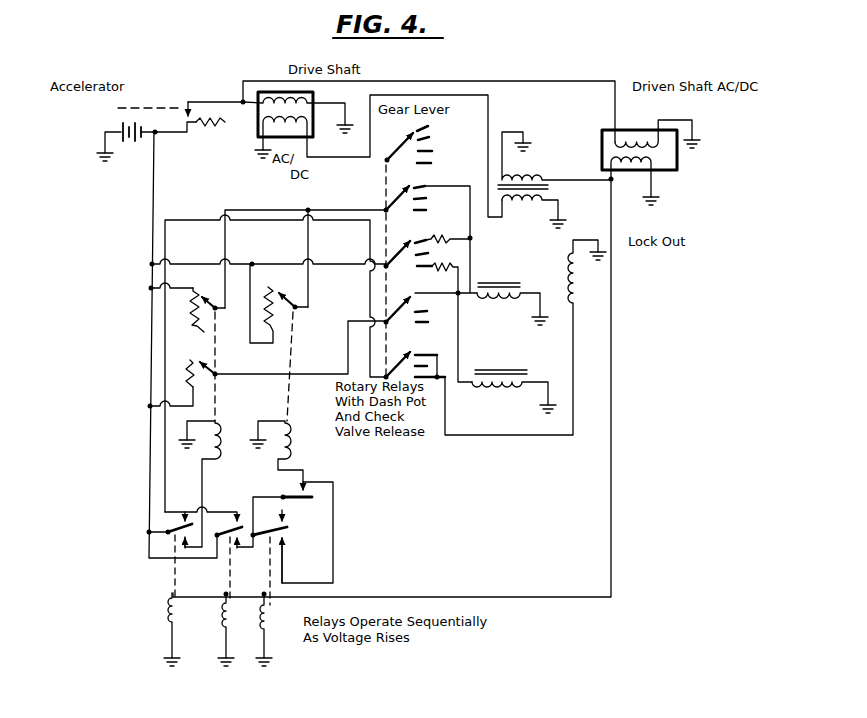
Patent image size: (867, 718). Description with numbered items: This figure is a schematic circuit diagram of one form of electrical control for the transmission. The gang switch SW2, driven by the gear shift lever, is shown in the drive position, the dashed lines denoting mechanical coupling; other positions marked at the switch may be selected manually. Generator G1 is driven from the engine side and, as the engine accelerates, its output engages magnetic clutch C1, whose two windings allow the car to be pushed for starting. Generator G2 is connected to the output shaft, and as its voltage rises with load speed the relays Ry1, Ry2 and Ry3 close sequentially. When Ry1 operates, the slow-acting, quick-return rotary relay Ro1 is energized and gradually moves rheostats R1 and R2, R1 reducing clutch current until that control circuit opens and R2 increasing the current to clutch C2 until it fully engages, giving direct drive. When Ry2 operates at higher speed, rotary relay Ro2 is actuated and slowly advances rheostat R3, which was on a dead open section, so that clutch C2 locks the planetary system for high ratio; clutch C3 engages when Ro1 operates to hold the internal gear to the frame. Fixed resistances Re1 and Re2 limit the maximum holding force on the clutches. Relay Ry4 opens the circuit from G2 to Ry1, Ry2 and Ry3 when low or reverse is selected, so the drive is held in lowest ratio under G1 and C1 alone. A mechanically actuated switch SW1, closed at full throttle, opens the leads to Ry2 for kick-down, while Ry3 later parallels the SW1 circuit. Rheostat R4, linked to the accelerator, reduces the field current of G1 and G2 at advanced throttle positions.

The rheostat R4 is at (210, 136).
The generator G1 is at (372, 153).
The generator G2 is at (629, 158).
The gang switch SW2 is at (424, 145).
The magnetic clutch C1 is at (554, 189).
The magnetic clutch C2 is at (505, 295).
The magnetic clutch C3 is at (509, 377).
The fixed resistance Re1 is at (427, 212).
The fixed resistance Re2 is at (428, 264).
The relay Ry4 is at (522, 337).
The rheostat R1 is at (197, 310).
The rheostat R2 is at (184, 381).
The rheostat R3 is at (279, 303).
The rotary relay Ro1 is at (215, 477).
The rotary relay Ro2 is at (295, 495).
The mechanically actuated switch SW1 is at (289, 539).
The relay Ry1 is at (162, 618).
The relay Ry2 is at (219, 620).
The relay Ry3 is at (267, 620).